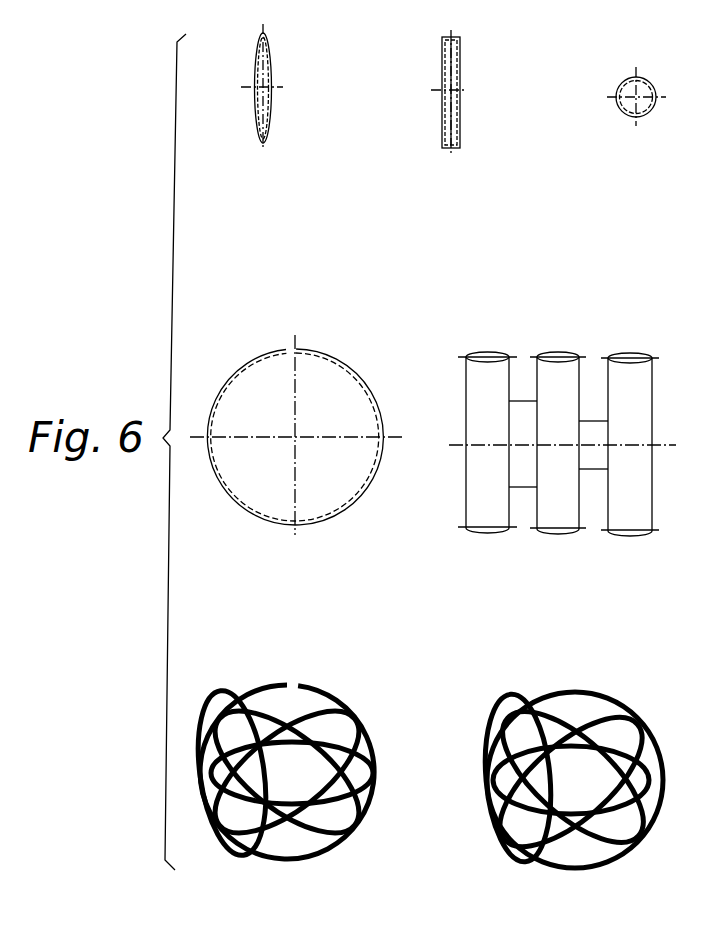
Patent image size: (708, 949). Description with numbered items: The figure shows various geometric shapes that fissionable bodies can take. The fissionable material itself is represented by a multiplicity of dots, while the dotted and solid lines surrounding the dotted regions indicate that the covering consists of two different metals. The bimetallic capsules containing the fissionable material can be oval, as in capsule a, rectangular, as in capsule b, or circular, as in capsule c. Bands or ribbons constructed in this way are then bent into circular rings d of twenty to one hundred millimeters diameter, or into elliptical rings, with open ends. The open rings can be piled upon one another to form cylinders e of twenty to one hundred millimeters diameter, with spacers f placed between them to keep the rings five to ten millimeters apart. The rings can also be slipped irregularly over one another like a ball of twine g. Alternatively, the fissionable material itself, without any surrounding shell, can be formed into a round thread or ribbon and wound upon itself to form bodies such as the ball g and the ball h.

The oval bimetallic capsule a is at (262, 98).
The rectangular bimetallic capsule b is at (448, 103).
The circular bimetallic capsule c is at (636, 113).
The circular ring d is at (297, 448).
The cylinder e is at (562, 461).
The spacer f is at (558, 444).
The ball of twine body g is at (283, 790).
The wound thread body h is at (571, 795).